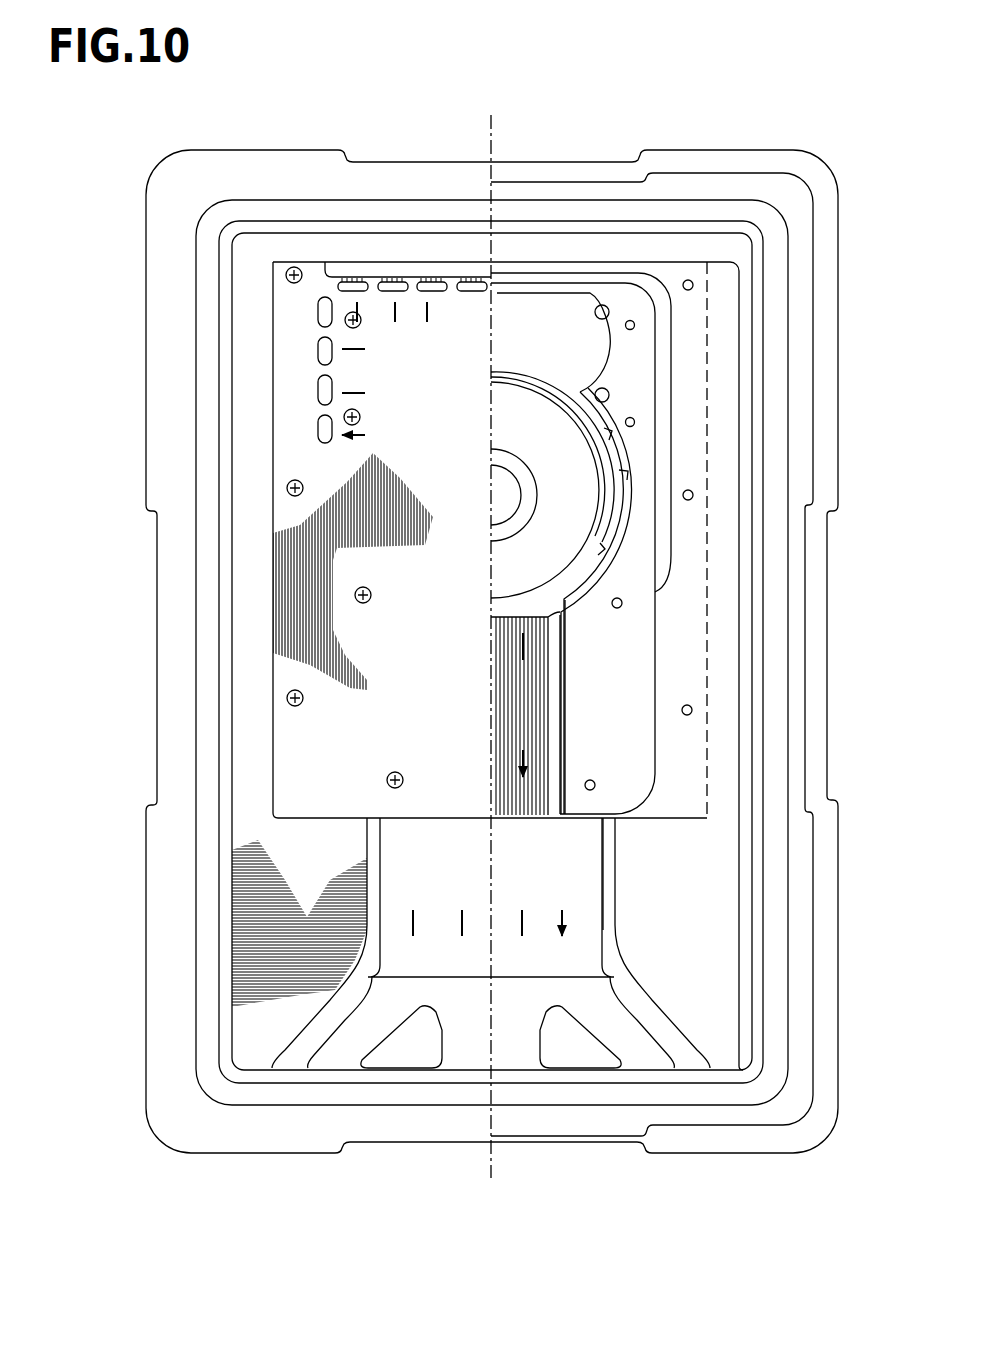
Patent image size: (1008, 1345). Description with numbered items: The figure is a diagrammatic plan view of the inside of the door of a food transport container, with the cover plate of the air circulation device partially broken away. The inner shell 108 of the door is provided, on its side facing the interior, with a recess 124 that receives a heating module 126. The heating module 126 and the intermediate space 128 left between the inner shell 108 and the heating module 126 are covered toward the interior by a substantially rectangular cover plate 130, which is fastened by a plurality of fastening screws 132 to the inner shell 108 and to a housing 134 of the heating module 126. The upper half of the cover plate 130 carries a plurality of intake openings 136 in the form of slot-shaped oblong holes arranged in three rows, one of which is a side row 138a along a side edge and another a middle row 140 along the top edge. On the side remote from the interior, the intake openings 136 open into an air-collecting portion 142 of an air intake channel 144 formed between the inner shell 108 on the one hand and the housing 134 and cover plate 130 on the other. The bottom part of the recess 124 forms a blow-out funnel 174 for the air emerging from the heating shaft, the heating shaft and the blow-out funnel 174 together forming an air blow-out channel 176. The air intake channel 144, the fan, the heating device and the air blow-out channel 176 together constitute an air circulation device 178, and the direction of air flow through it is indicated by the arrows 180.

The inner shell 108 is at (267, 862).
The recess 124 is at (625, 758).
The heating module 126 is at (604, 460).
The intermediate space 128 is at (717, 423).
The cover plate 130 is at (481, 468).
The fastening screws 132 is at (303, 698).
The housing 134 is at (600, 527).
The intake openings 136 is at (352, 282).
The side row 138a is at (300, 440).
The middle row 140 is at (500, 338).
The air-collecting portion 142 is at (630, 352).
The air intake channel 144 is at (628, 386).
The blow-out funnel 174 is at (550, 885).
The air blow-out channel 176 is at (582, 902).
The air circulation device 178 is at (570, 707).
The arrows 180 is at (365, 349).